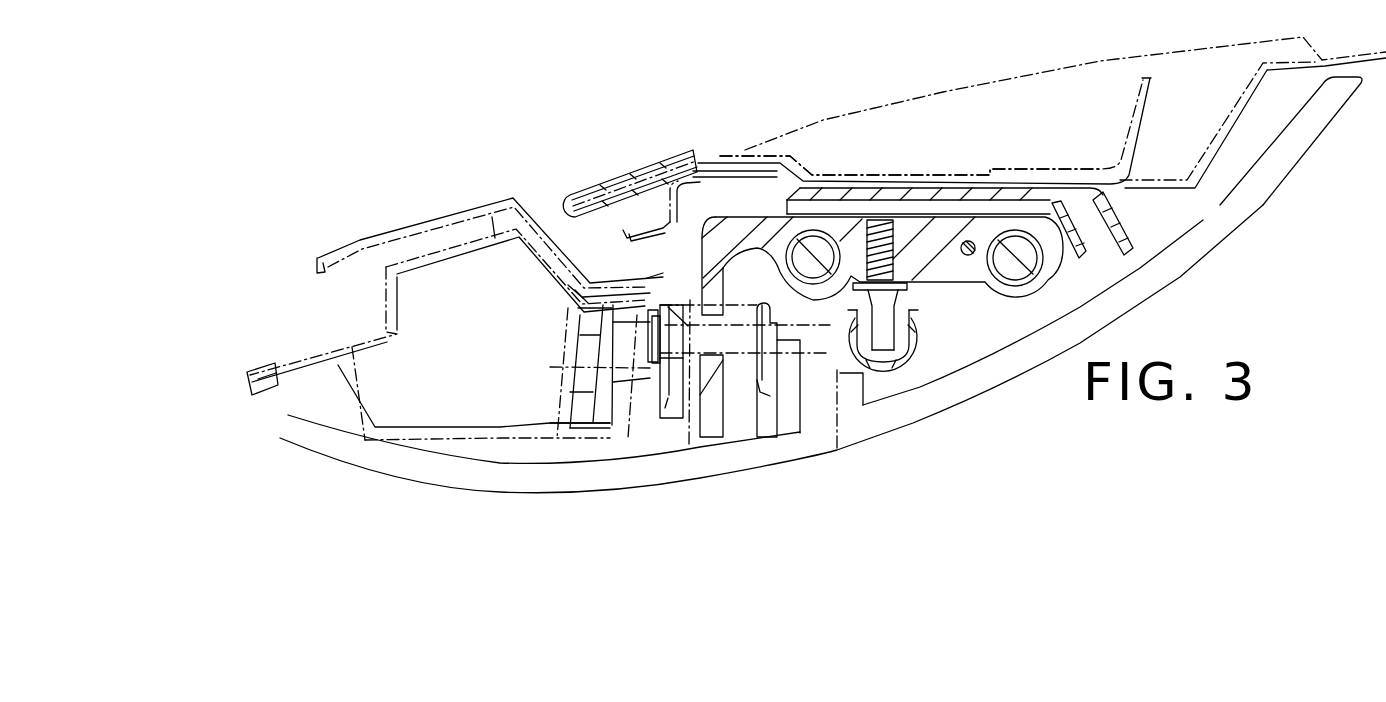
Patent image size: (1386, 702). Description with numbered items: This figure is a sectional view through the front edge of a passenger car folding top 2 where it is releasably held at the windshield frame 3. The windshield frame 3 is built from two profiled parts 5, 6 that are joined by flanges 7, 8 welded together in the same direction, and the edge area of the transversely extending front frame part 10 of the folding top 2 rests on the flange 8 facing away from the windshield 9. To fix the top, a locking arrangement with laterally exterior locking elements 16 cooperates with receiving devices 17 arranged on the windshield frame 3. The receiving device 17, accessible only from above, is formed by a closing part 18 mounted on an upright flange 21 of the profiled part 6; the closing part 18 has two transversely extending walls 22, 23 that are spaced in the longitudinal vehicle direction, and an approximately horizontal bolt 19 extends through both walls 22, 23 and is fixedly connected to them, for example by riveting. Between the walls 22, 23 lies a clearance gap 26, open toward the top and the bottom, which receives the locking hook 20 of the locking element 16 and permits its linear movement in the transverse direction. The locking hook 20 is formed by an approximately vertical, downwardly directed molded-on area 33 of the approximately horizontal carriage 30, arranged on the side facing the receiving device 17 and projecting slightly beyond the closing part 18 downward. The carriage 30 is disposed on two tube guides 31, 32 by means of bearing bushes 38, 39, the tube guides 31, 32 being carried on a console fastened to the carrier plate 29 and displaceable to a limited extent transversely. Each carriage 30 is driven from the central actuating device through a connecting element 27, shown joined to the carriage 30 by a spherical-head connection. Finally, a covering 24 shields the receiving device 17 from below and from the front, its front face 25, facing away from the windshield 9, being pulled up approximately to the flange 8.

The folding top 2 is at (933, 88).
The windshield frame 3 is at (297, 326).
The profiled part 5 is at (492, 212).
The profiled part 6 is at (475, 417).
The flange 7 is at (242, 407).
The flange 8 is at (623, 273).
The windshield 9 is at (161, 320).
The front frame part 10 is at (632, 165).
The locking element 16 is at (942, 291).
The receiving device 17 is at (665, 408).
The closing part 18 is at (758, 430).
The bolt 19 is at (680, 295).
The locking hook 20 is at (713, 446).
The upright flange 21 is at (563, 328).
The wall 22 is at (563, 375).
The wall 23 is at (780, 325).
The covering 24 is at (347, 455).
The front face 25 is at (802, 413).
The clearance gap 26 is at (690, 447).
The connecting element 27 is at (915, 373).
The carrier plate 29 is at (1040, 200).
The carriage 30 is at (762, 207).
The tube guide 31 is at (820, 245).
The tube guide 32 is at (1045, 300).
The molded-on area 33 is at (716, 285).
The bearing bush 38 is at (833, 237).
The bearing bush 39 is at (1012, 287).